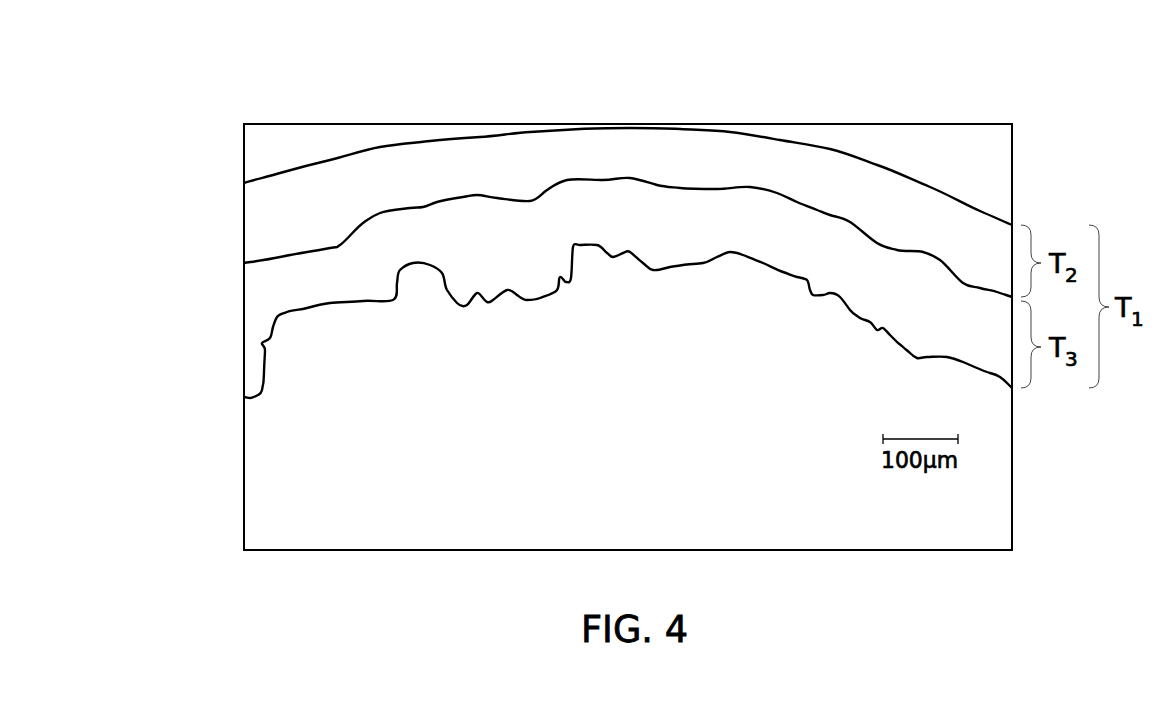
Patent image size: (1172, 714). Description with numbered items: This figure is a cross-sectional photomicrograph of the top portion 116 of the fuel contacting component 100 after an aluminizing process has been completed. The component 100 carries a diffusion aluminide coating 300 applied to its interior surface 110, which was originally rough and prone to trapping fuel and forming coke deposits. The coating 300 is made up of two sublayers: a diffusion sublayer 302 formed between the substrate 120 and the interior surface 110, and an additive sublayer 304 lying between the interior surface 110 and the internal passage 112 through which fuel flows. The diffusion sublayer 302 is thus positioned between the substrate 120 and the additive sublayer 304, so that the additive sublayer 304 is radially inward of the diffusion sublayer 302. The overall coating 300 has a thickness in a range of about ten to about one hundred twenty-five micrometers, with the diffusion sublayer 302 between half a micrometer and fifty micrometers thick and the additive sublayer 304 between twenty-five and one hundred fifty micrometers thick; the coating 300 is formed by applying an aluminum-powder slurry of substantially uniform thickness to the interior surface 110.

The fuel contacting component 100 is at (1012, 97).
The interior surface 110 is at (302, 247).
The internal passage 112 is at (236, 496).
The top portion 116 is at (294, 97).
The substrate 120 is at (998, 158).
The diffusion aluminide coating 300 is at (146, 183).
The diffusion sublayer 302 is at (222, 183).
The additive sublayer 304 is at (222, 265).